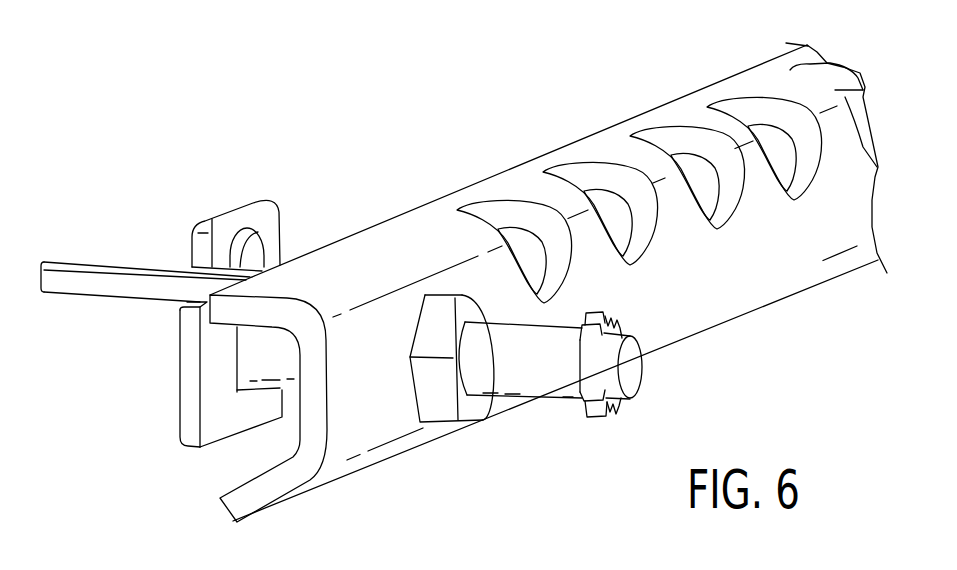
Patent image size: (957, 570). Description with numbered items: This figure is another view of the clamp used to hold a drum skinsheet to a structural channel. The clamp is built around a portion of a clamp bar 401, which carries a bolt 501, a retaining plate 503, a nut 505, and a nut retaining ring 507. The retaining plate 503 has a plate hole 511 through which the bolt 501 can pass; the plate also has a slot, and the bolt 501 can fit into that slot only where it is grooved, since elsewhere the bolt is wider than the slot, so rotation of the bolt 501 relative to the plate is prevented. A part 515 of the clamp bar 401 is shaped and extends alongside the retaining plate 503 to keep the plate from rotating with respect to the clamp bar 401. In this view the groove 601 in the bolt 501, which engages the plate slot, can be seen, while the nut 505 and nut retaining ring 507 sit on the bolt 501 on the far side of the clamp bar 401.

The clamp bar 401 is at (432, 213).
The bolt 501 is at (248, 358).
The retaining plate 503 is at (273, 218).
The nut 505 is at (425, 328).
The nut retaining ring 507 is at (622, 323).
The plate hole 511 is at (238, 260).
The part of clamp bar 515 is at (75, 282).
The groove 601 is at (240, 385).